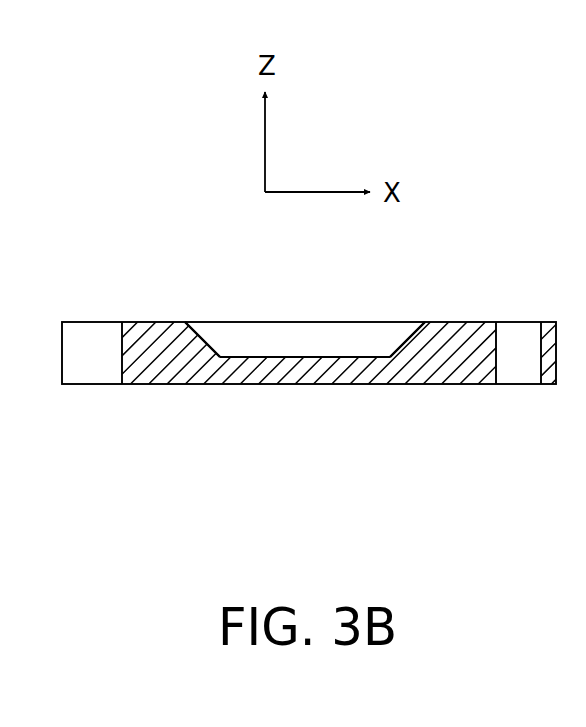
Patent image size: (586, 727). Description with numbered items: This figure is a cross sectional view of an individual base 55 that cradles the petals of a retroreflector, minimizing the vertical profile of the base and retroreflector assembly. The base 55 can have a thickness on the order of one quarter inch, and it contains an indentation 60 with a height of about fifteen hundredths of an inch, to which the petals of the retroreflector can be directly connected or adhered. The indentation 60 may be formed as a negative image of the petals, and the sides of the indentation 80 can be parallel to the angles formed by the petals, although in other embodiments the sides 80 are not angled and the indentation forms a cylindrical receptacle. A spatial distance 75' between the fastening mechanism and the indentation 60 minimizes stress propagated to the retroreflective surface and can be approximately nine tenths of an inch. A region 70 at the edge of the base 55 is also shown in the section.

The base 55 is at (408, 424).
The indentation 60 is at (302, 322).
The edge region of substrate 70 is at (518, 322).
The spatial distance 75' is at (169, 325).
The sides of the indentation 80 is at (203, 341).